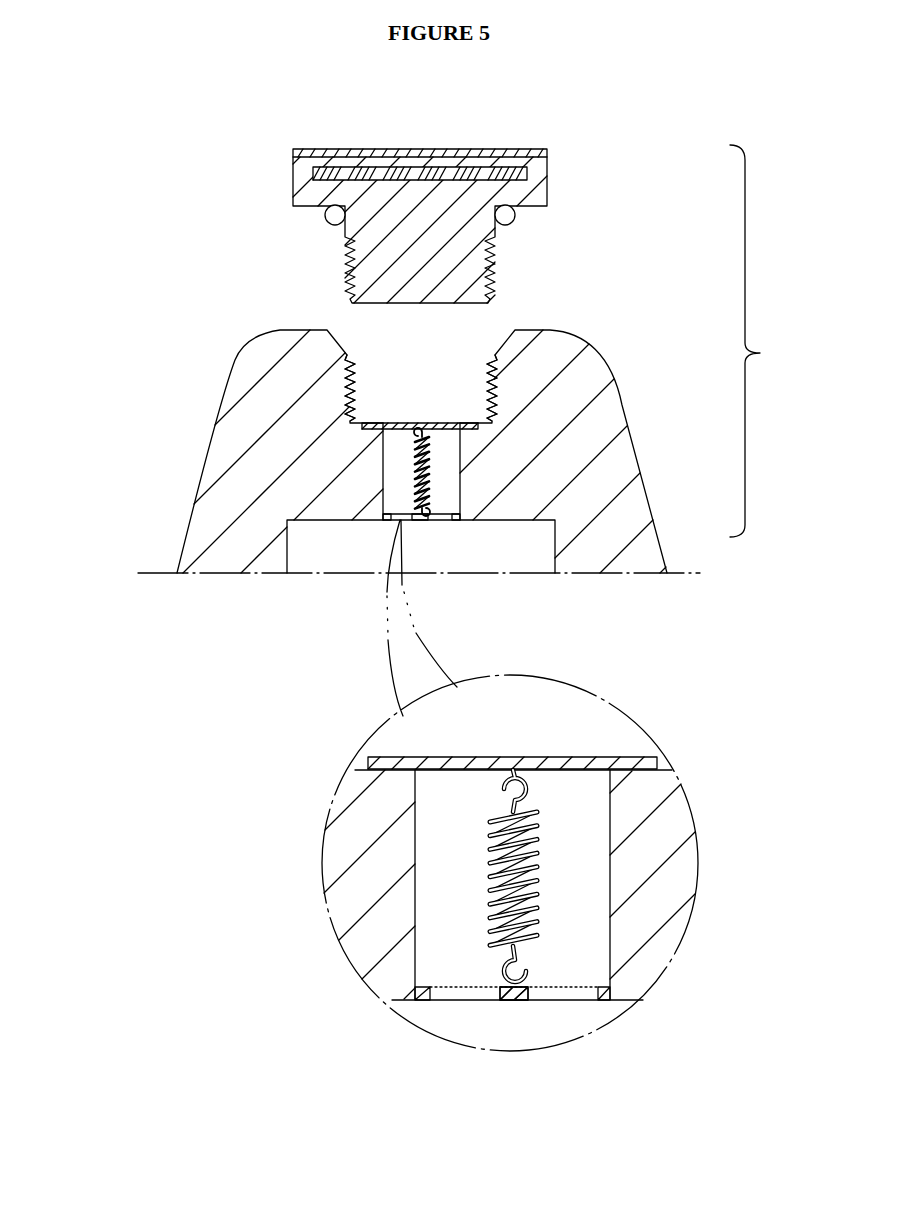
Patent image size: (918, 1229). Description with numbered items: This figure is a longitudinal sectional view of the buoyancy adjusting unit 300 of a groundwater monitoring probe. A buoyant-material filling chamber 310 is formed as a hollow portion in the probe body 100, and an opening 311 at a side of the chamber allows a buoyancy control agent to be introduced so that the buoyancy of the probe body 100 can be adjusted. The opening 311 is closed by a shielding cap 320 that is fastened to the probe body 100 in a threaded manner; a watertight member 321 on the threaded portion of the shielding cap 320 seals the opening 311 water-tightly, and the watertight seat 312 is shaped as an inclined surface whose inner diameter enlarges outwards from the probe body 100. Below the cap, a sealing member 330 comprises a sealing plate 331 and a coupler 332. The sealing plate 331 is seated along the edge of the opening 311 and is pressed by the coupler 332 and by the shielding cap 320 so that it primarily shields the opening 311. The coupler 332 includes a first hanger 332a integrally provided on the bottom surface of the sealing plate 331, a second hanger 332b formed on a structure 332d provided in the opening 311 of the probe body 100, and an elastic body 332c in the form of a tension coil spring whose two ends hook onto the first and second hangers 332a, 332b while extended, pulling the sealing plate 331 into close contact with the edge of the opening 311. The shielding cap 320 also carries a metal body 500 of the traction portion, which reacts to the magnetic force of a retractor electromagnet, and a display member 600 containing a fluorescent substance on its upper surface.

The probe body 100 is at (212, 507).
The buoyancy adjusting unit 300 is at (450, 587).
The buoyant-material filling chamber 310 is at (536, 556).
The opening 311 is at (447, 458).
The watertight seat 312 is at (343, 329).
The shielding cap 320 is at (537, 188).
The watertight member 321 is at (513, 222).
The sealing member 330 is at (443, 415).
The sealing plate 331 is at (393, 763).
The coupler 332 is at (233, 777).
The first hanger 332a is at (510, 787).
The second hanger 332b is at (510, 968).
The elastic body 332c is at (494, 883).
The structure 332d is at (515, 998).
The metal body 500 is at (313, 172).
The display member 600 is at (323, 149).